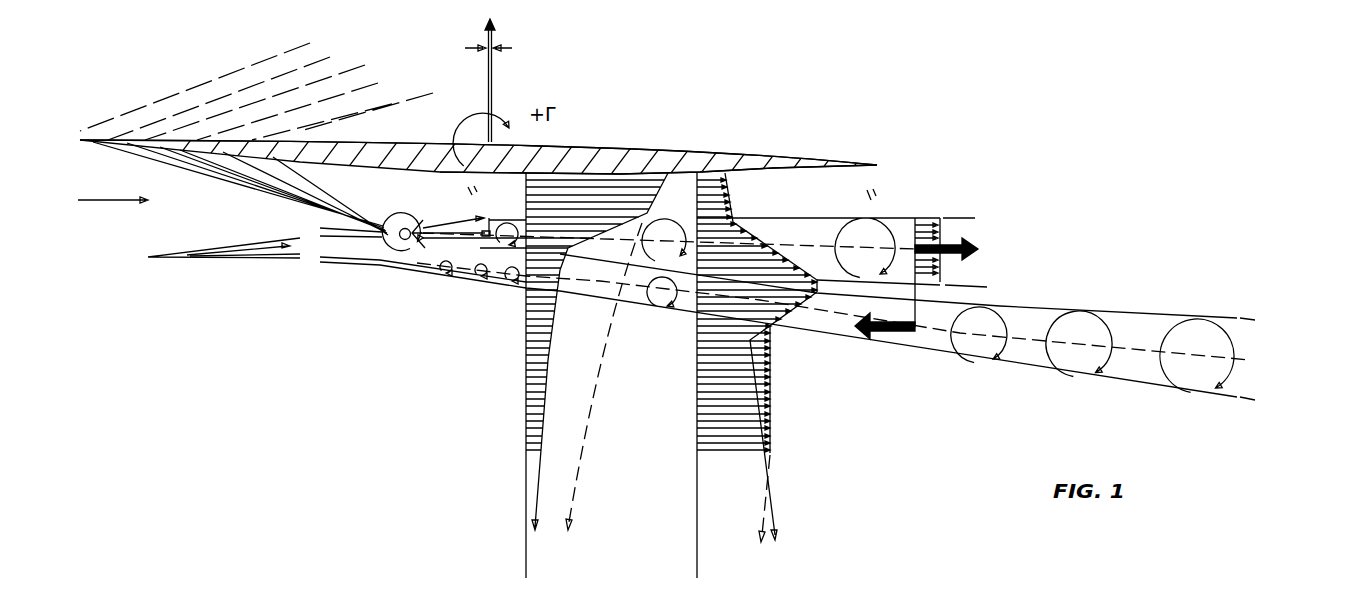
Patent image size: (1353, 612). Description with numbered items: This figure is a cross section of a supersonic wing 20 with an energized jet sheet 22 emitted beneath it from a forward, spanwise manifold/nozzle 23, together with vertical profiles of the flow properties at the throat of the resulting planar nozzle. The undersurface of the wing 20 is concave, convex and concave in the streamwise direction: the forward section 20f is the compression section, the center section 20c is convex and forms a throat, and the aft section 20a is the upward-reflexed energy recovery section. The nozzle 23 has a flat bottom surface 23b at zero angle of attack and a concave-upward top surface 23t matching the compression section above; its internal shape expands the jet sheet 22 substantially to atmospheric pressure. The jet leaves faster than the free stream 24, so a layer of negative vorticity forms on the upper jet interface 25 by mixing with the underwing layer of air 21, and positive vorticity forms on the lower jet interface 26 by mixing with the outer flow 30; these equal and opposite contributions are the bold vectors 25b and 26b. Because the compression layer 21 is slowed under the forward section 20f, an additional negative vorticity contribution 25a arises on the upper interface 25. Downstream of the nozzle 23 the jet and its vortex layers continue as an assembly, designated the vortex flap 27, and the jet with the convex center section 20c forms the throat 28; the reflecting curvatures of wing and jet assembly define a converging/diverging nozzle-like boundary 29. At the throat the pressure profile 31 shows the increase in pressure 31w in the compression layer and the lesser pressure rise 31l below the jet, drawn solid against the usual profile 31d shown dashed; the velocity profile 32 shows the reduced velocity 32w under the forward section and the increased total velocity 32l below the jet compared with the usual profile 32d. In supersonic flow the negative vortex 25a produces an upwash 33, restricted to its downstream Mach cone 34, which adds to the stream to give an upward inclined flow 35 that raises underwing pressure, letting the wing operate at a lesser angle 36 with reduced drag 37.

The supersonic wing 20 is at (682, 152).
The aft section 20a is at (796, 167).
The center section 20c is at (417, 172).
The forward section 20f is at (195, 156).
The layer of air 21 is at (389, 184).
The jet sheet 22 is at (483, 234).
The manifold/nozzle 23 is at (171, 258).
The top surface 23t is at (193, 247).
The bottom surface 23b is at (242, 256).
The free stream 24 is at (87, 200).
The upper jet interface 25 is at (796, 244).
The additional negative vorticity contribution 25a is at (384, 245).
The bold vector of upper vorticity 25b is at (988, 248).
The lower jet interface 26 is at (816, 319).
The bold vector of lower vorticity 26b is at (868, 340).
The vortex flap 27 is at (1128, 352).
The throat 28 is at (472, 186).
The planar converging/diverging nozzle-like boundary 29 is at (874, 196).
The outer flow 30 is at (975, 434).
The pressure profile 31 is at (613, 375).
The increase in pressure 31w is at (662, 177).
The lesser pressure rise 31l is at (557, 378).
The usual pressure profile 31d is at (578, 483).
The velocity profile 32 is at (765, 377).
The reduced velocity 32w is at (740, 201).
The increased total velocity 32l is at (770, 418).
The usual velocity profile 32d is at (765, 498).
The upwash 33 is at (495, 201).
The downstream Mach cone 34 is at (425, 247).
The upward inclined flow 35 is at (446, 196).
The lesser angle 36 is at (505, 83).
The reduced drag 37 is at (495, 21).